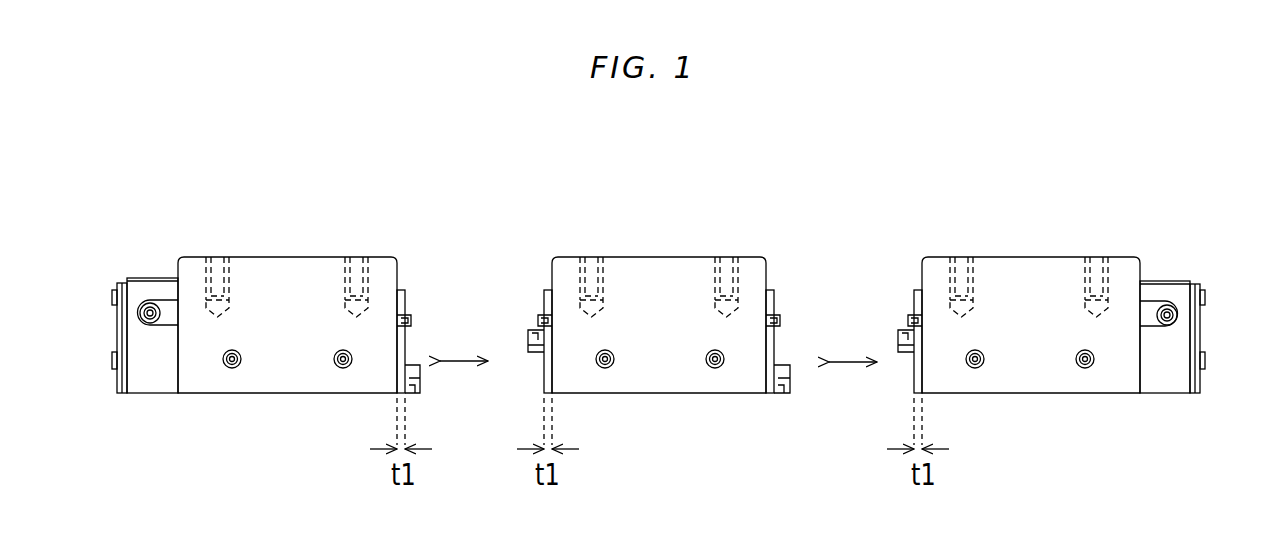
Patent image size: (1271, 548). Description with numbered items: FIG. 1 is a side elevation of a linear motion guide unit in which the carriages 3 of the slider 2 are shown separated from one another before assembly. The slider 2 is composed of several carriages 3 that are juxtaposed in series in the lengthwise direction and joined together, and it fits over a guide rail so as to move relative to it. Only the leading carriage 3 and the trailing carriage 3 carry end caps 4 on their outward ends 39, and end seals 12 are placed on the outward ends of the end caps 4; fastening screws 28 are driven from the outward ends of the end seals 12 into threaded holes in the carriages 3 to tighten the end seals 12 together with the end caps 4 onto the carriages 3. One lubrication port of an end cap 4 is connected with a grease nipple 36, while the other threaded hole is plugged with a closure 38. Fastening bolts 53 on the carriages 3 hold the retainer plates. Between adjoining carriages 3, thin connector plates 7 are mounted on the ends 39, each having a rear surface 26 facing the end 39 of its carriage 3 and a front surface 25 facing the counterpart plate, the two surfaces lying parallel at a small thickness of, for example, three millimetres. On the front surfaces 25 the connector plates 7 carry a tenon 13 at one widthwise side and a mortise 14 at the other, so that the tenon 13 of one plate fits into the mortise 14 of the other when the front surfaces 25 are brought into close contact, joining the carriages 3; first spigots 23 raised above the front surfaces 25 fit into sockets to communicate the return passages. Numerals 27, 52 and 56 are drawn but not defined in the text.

The slider 2 is at (876, 236).
The carriage 3 is at (288, 293).
The end cap 4 is at (155, 290).
The connector plate 7 is at (399, 355).
The end seal 12 is at (122, 310).
The tenon 13 is at (408, 330).
The mortise 14 is at (546, 312).
The first spigot 23 is at (416, 393).
The front surface 25 is at (406, 345).
The rear surface 26 is at (365, 345).
The lower housing portion 27 is at (290, 365).
The fastening screw 28 is at (117, 282).
The grease nipple 36 is at (151, 323).
The closure 38 is at (1168, 325).
The end of carriage 39 is at (398, 278).
The mounting hole 52 is at (357, 262).
The fastening bolt 53 is at (233, 368).
The mounting hole 56 is at (240, 257).